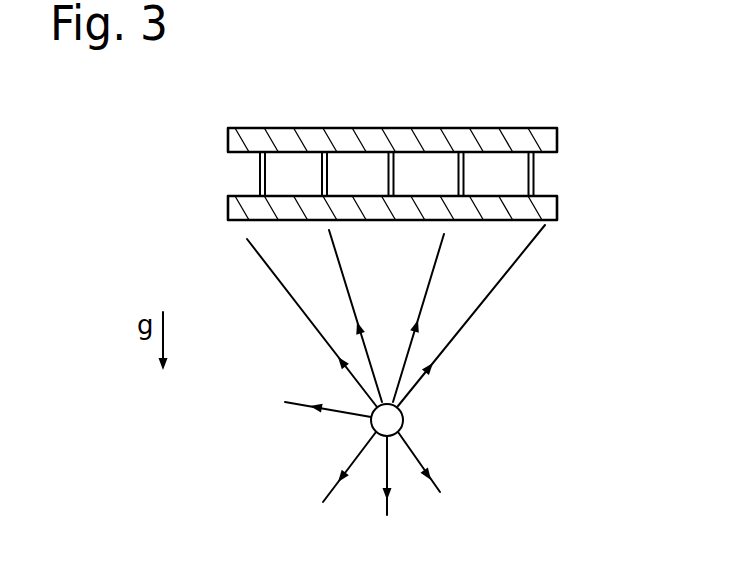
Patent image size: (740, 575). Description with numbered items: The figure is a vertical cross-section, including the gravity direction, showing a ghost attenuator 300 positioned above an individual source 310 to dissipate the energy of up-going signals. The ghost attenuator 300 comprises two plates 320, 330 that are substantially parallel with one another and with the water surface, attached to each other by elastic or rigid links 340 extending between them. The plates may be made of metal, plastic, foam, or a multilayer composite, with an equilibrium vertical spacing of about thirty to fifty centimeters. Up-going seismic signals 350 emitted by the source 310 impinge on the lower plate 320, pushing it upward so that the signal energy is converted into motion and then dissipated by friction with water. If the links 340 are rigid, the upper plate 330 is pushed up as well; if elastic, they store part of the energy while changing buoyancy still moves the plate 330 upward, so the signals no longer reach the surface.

The ghost attenuator 300 is at (215, 123).
The individual source 310 is at (403, 420).
The plate 320 is at (558, 208).
The plate 330 is at (558, 137).
The links 340 is at (528, 182).
The up-going seismic signals 350 is at (396, 370).